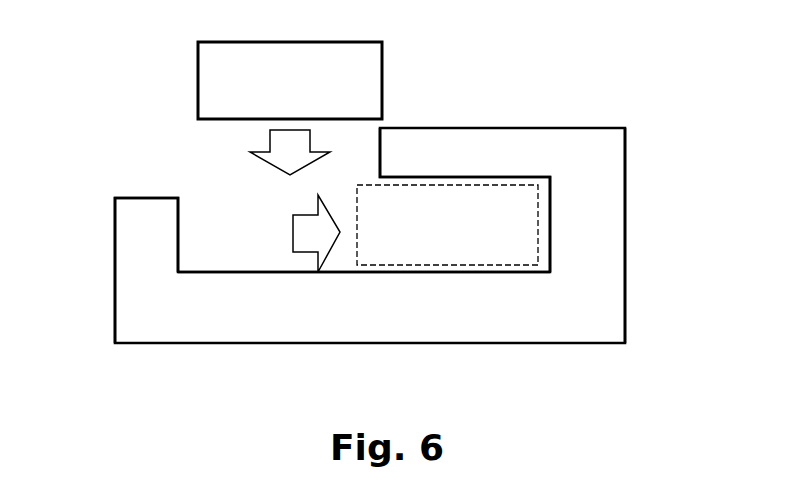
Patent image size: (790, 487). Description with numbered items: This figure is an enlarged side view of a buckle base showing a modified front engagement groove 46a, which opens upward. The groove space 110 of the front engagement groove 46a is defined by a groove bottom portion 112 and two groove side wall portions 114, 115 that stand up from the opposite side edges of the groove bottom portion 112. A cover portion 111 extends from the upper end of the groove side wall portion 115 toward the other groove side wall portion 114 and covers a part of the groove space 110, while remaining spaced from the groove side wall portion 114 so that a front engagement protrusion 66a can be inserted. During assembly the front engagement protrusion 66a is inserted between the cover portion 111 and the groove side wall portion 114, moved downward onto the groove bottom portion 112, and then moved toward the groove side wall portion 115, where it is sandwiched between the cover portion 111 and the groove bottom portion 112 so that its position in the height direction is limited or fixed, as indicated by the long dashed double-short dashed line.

The front engagement protrusion 66a is at (362, 77).
The cover portion 111 is at (497, 143).
The groove side wall portion 114 is at (125, 245).
The groove side wall portion 115 is at (602, 235).
The groove space 110 is at (232, 242).
The groove bottom portion 112 is at (333, 272).
The front engagement groove 46a is at (214, 171).